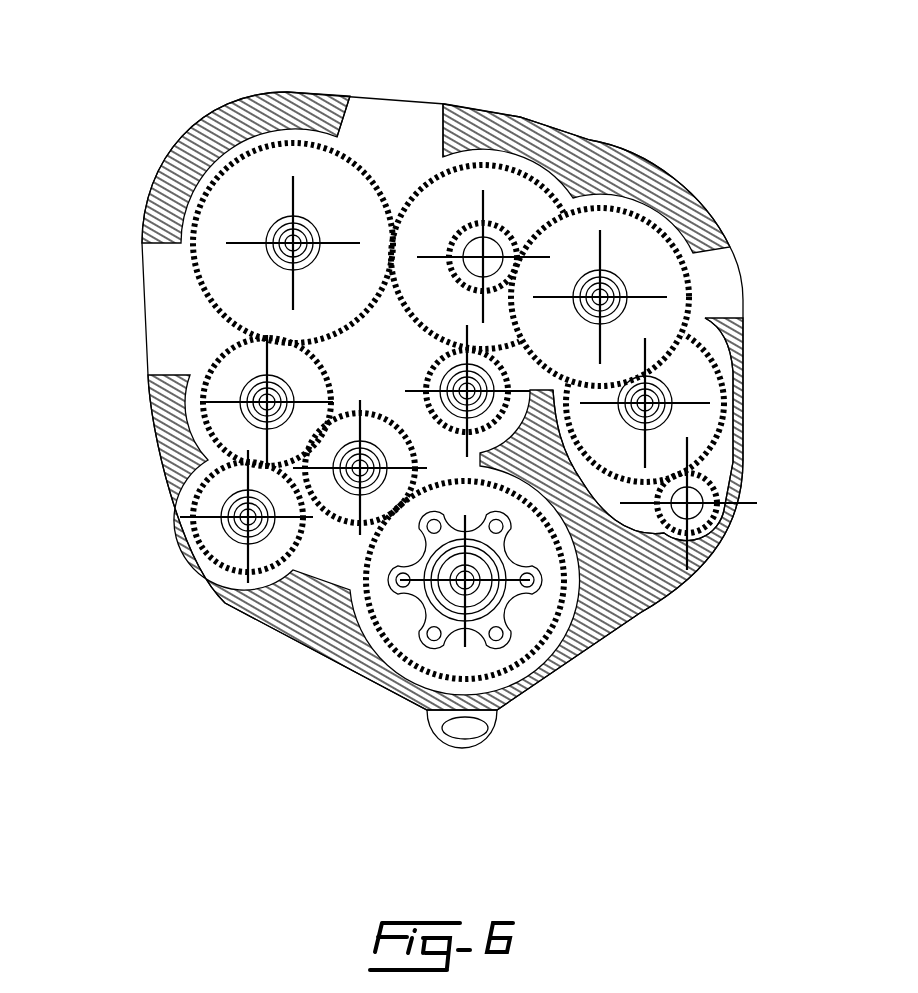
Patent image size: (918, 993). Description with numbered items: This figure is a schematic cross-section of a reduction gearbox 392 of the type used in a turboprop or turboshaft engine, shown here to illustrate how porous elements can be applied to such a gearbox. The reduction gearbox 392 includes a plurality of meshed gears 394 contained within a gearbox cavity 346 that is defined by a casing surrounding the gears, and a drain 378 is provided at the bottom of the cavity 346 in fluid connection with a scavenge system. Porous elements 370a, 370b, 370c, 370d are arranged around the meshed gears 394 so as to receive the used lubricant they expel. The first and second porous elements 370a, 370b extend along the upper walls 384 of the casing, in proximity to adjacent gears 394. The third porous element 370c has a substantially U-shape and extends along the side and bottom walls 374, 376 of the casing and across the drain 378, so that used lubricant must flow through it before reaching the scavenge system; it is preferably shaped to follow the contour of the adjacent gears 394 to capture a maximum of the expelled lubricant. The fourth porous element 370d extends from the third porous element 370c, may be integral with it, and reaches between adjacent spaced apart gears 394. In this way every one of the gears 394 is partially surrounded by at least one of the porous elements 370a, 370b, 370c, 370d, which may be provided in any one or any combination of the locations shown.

The gearbox cavity 346 is at (403, 137).
The first porous element 370a is at (207, 143).
The second porous element 370b is at (593, 143).
The third porous element 370c is at (307, 657).
The fourth porous element 370d is at (612, 527).
The side walls 374 is at (743, 452).
The bottom walls 376 is at (543, 687).
The drain 378 is at (470, 727).
The upper walls 384 is at (417, 97).
The reduction gearbox 392 is at (439, 407).
The meshed gears 394 is at (340, 177).